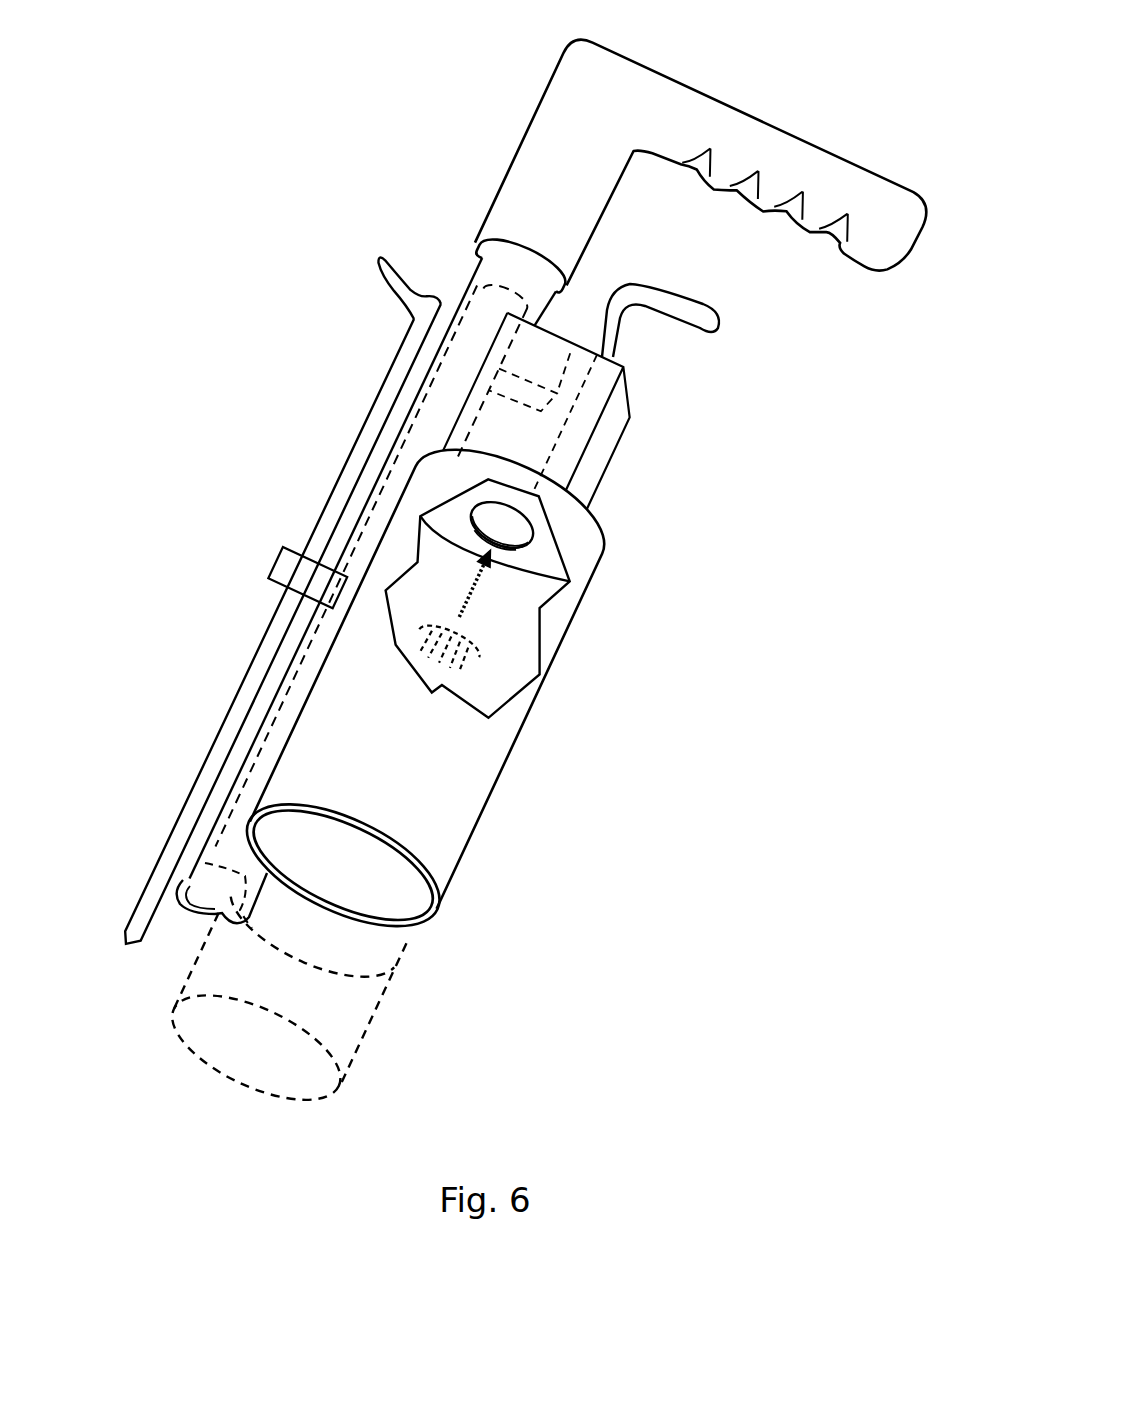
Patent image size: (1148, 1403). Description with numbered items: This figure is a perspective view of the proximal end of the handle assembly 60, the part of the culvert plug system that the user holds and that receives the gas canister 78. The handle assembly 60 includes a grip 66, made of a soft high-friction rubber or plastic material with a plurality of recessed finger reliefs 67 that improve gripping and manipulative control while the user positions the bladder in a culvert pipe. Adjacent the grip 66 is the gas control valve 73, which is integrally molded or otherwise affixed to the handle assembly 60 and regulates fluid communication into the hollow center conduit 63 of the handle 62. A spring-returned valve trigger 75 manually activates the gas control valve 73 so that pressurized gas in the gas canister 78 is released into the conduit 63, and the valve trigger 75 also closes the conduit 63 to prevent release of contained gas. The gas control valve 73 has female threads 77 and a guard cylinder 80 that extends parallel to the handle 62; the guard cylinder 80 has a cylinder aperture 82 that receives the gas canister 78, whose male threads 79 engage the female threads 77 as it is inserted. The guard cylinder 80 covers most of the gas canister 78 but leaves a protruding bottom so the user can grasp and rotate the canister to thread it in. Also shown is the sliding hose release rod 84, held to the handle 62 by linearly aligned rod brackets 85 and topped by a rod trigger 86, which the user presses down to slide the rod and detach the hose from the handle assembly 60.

The handle assembly 60 is at (392, 192).
The handle 62 is at (243, 767).
The hollow center conduit 63 is at (287, 697).
The grip 66 is at (728, 93).
The recessed finger reliefs 67 is at (828, 235).
The gas control valve 73 is at (620, 428).
The valve trigger 75 is at (687, 313).
The female threads 77 is at (516, 550).
The gas canister 78 is at (373, 1020).
The male threads 79 is at (480, 670).
The guard cylinder 80 is at (495, 798).
The cylinder aperture 82 is at (400, 923).
The hose release rod 84 is at (372, 397).
The rod brackets 85 is at (280, 562).
The rod trigger 86 is at (395, 293).